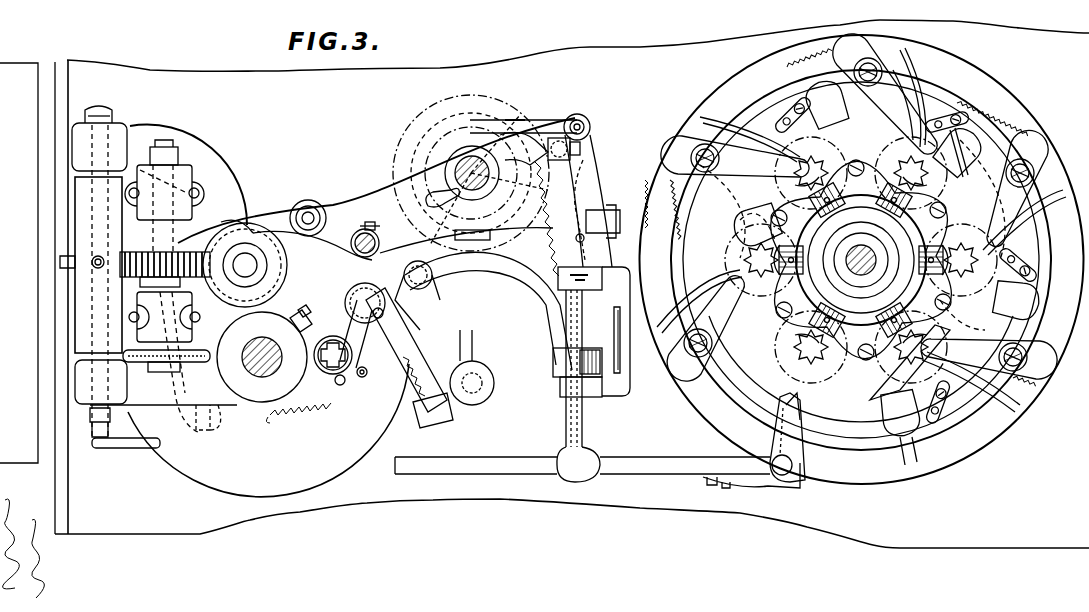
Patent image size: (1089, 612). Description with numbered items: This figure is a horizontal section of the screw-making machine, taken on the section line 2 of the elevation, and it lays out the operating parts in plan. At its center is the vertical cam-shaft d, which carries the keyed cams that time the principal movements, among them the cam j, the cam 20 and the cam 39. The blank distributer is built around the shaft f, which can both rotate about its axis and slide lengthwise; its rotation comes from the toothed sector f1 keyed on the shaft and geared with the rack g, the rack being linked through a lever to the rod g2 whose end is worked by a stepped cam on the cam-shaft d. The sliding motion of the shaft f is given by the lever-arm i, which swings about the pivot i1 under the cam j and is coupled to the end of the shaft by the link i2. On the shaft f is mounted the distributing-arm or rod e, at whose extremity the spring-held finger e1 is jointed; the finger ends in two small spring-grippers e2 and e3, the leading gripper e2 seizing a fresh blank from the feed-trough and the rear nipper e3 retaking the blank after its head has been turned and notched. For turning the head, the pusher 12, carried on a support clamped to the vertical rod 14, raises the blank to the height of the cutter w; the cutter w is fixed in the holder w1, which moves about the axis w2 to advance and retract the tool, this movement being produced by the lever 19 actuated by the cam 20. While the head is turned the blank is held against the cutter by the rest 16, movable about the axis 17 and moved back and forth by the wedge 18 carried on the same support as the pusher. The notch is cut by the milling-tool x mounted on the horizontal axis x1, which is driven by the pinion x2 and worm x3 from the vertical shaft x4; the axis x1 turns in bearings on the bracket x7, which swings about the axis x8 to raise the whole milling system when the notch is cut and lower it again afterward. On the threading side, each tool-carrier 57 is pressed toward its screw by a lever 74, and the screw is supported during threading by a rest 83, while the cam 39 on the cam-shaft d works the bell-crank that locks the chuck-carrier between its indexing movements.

The bracket x7 is at (85, 296).
The axis x8 is at (97, 175).
The horizontal axis x1 is at (163, 238).
The pinion x2 is at (221, 222).
The worm x3 is at (253, 233).
The vertical shaft x4 is at (252, 265).
The milling-tool x is at (148, 357).
The lever-arm i is at (358, 190).
The pivot i1 is at (308, 217).
The link i2 is at (590, 176).
The vertical rod 14 is at (367, 228).
The vertical cam-shaft d is at (474, 160).
The cam 39 is at (471, 185).
The cam 20 is at (508, 150).
The section line 2 is at (535, 136).
The cam j is at (440, 196).
The rod g2 is at (572, 150).
The lever 19 is at (560, 318).
The axis w2 is at (428, 282).
The holder w1 is at (414, 348).
The cutter w is at (374, 360).
The pusher 12 is at (370, 312).
The axis 17 is at (362, 377).
The rest 16 is at (337, 368).
The wedge 18 is at (300, 318).
The rack g is at (614, 350).
The toothed sector f1 is at (578, 362).
The shaft f is at (570, 432).
The rod e is at (643, 472).
The finger e1 is at (768, 478).
The spring-gripper e2 is at (788, 406).
The spring-gripper e3 is at (795, 423).
The rest 83 is at (957, 240).
The lever 74 is at (720, 266).
The tool-carrier 57 is at (733, 338).